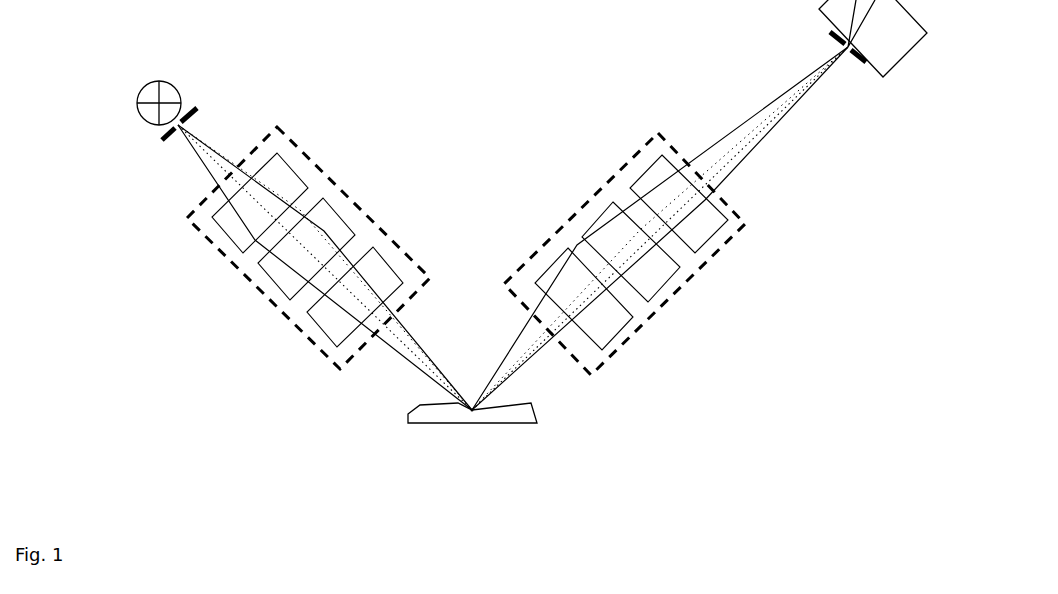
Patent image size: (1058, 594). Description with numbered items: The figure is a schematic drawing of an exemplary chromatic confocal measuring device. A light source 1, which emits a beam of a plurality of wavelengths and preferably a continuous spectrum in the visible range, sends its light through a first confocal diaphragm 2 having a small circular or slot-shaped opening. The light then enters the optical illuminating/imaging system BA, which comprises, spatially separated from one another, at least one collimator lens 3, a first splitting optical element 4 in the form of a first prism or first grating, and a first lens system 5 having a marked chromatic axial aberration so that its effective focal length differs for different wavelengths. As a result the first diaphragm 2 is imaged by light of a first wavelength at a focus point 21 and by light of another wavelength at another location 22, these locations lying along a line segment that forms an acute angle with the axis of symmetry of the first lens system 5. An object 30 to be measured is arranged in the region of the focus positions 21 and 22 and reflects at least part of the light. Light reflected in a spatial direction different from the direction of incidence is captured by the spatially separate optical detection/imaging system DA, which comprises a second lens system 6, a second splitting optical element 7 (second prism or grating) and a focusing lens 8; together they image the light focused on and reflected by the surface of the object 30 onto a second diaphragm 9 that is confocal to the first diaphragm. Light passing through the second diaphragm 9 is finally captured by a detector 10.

The light source 1 is at (140, 87).
The first confocal diaphragm 2 is at (162, 140).
The collimator lens 3 is at (240, 252).
The first splitting optical element 4 is at (270, 288).
The first lens system 5 is at (316, 331).
The second lens system 6 is at (625, 333).
The second splitting optical element 7 is at (672, 289).
The focusing lens 8 is at (717, 240).
The second diaphragm 9 is at (828, 40).
The detector 10 is at (892, 65).
The focus point 21 is at (472, 394).
The another location 22 is at (474, 409).
The object 30 is at (408, 417).
The optical illuminating/imaging system BA is at (313, 164).
The optical detection/imaging system DA is at (613, 177).